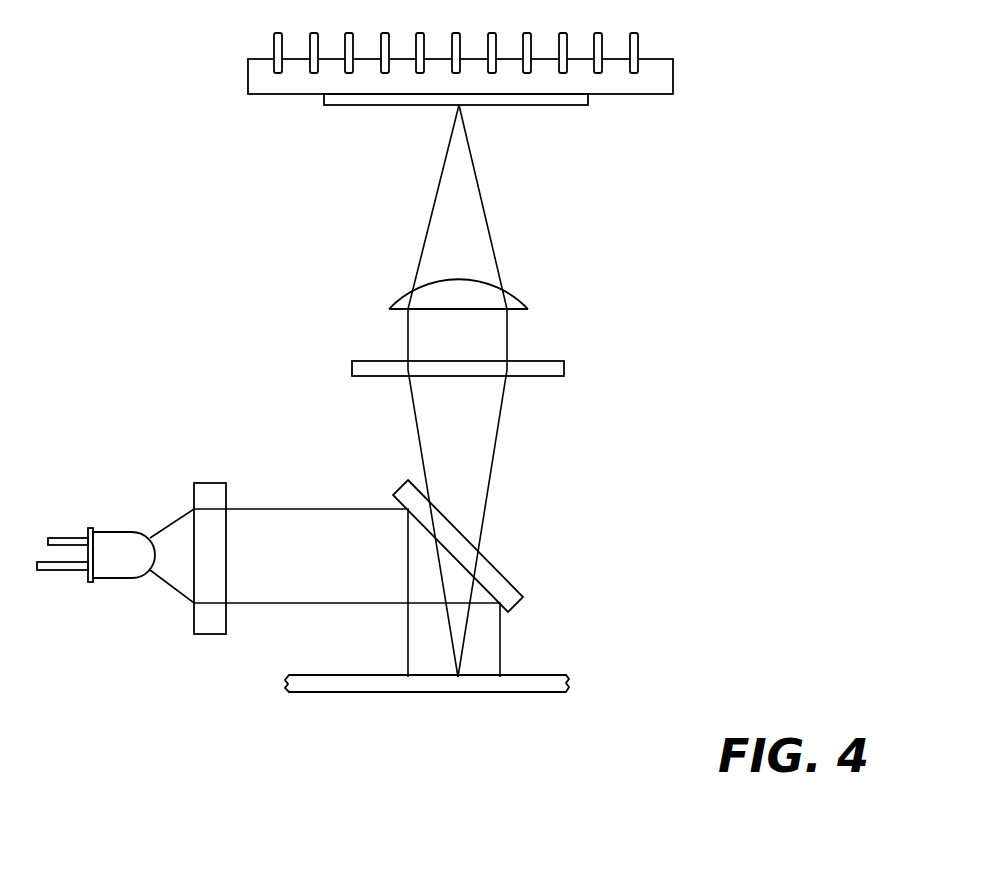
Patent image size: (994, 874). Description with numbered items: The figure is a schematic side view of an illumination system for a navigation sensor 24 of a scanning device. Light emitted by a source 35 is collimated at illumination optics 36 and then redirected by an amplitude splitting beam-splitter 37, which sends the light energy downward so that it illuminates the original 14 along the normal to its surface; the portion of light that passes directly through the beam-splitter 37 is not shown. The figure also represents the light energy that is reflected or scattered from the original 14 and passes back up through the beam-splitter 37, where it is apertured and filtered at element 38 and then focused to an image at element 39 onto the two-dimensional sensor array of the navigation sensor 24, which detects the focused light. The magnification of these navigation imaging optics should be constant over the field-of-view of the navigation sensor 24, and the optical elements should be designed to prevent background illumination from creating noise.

The original 14 is at (545, 690).
The navigation sensor 24 is at (258, 80).
The source 35 is at (120, 550).
The illumination optics 36 is at (211, 494).
The amplitude splitting beam-splitter 37 is at (492, 576).
The aperturing and filtering element 38 is at (543, 366).
The focusing element 39 is at (512, 300).